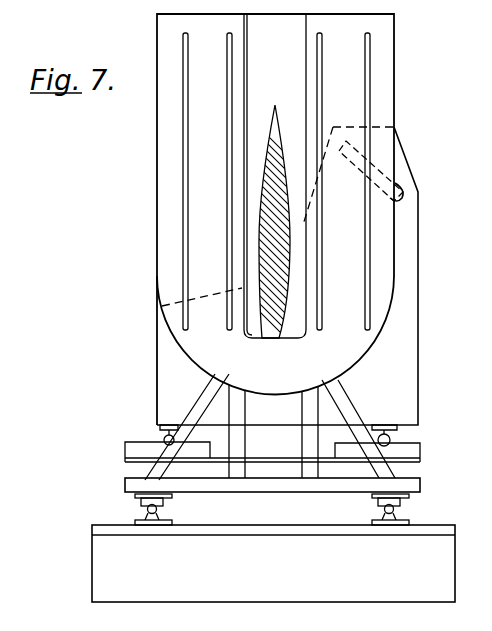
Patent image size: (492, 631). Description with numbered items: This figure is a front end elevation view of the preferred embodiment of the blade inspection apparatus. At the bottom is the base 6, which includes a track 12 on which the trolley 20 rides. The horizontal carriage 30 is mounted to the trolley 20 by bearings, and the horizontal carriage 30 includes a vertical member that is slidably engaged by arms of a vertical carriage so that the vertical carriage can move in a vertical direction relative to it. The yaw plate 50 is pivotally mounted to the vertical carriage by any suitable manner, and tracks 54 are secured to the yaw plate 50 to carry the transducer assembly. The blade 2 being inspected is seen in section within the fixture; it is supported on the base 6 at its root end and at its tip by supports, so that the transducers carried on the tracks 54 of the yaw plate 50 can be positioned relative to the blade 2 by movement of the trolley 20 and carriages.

The yaw plate 50 is at (380, 44).
The tracks 54 is at (228, 165).
The blade 2 is at (265, 241).
The horizontal carriage 30 is at (410, 245).
The trolley 20 is at (418, 488).
The track 12 is at (134, 520).
The base 6 is at (102, 563).